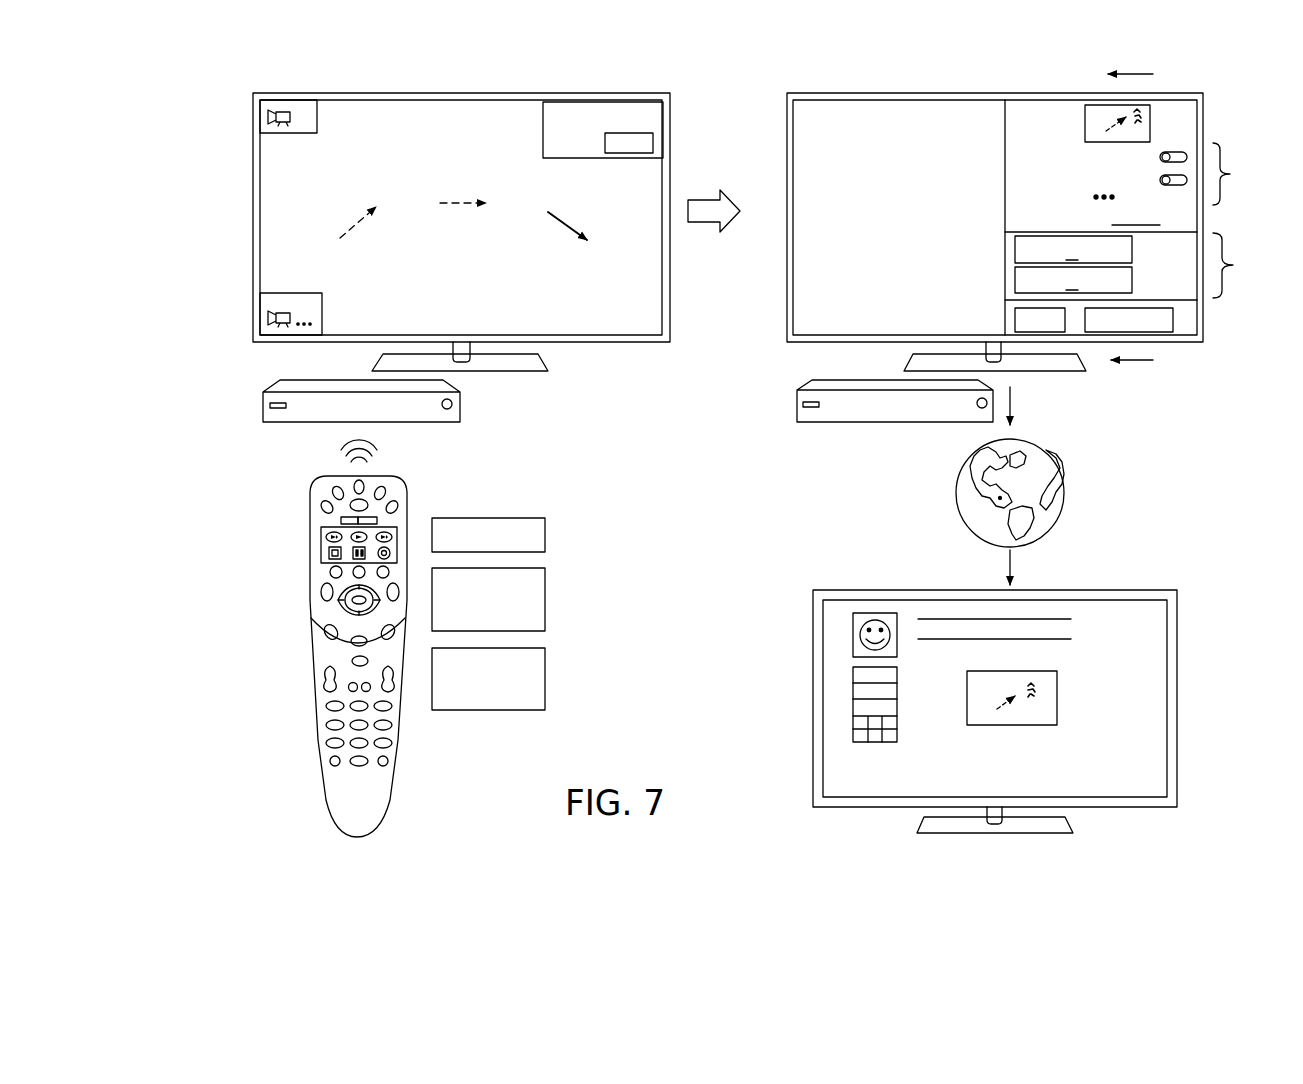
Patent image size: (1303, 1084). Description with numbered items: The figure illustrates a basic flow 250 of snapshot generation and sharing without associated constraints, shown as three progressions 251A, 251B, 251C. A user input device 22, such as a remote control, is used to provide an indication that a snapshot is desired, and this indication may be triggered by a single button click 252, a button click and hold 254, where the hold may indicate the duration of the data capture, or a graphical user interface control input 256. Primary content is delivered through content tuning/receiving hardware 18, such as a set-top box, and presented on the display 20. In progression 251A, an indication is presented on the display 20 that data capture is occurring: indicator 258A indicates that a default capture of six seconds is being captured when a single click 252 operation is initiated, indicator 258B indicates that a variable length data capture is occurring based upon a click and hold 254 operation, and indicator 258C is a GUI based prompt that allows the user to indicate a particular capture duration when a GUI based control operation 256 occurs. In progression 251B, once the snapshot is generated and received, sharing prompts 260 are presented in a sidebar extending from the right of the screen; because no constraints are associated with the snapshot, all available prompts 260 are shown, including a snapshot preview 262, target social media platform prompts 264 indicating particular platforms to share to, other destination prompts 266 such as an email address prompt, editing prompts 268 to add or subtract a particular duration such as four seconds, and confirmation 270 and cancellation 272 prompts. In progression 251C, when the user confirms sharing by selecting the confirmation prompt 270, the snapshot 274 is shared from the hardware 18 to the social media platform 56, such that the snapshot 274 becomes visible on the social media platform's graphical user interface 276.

The basic flow 250 is at (423, 192).
The progression 251A is at (461, 192).
The progression 251B is at (1055, 192).
The progression 251C is at (1058, 689).
The display 20 is at (462, 93).
The content tuning/receiving hardware 18 is at (455, 400).
The user input device 22 is at (313, 675).
The indicator 258A is at (317, 112).
The indicator 258B is at (322, 313).
The indicator 258C is at (543, 128).
The single button click 252 is at (545, 535).
The button click and hold 254 is at (545, 600).
The graphical user interface control input 256 is at (545, 683).
The sharing prompts 260 is at (990, 130).
The snapshot preview 262 is at (1085, 125).
The target social media platform prompts 264 is at (1148, 174).
The other destination prompts 266 is at (1210, 222).
The editing prompts 268 is at (1148, 265).
The confirmation prompt 270 is at (1015, 318).
The cancellation prompt 272 is at (1173, 318).
The social media platform 56 is at (1064, 493).
The snapshot 274 is at (1057, 697).
The graphical user interface 276 is at (1118, 633).